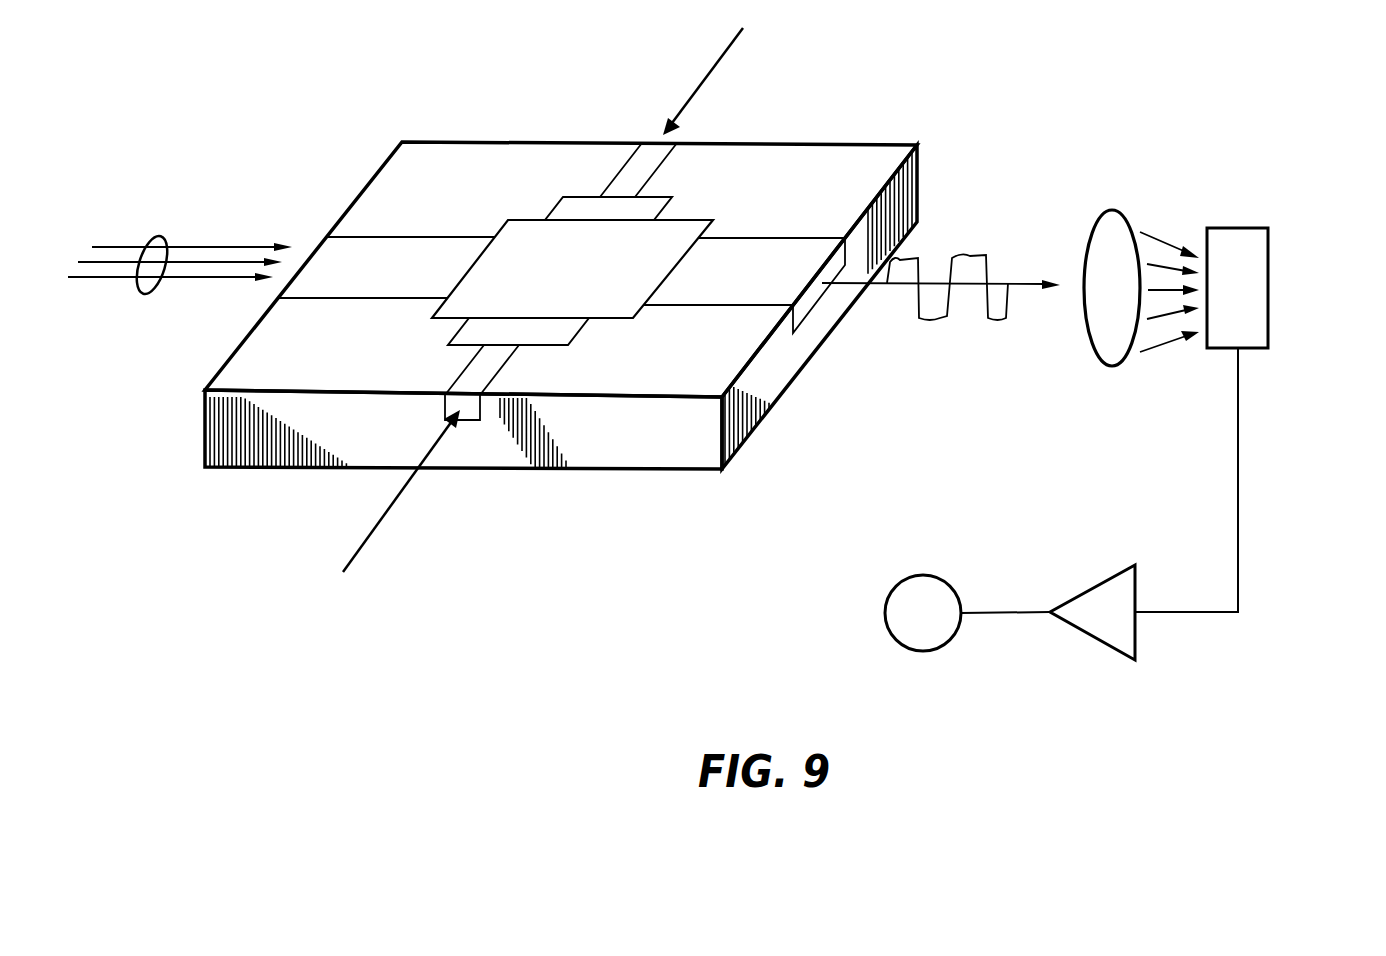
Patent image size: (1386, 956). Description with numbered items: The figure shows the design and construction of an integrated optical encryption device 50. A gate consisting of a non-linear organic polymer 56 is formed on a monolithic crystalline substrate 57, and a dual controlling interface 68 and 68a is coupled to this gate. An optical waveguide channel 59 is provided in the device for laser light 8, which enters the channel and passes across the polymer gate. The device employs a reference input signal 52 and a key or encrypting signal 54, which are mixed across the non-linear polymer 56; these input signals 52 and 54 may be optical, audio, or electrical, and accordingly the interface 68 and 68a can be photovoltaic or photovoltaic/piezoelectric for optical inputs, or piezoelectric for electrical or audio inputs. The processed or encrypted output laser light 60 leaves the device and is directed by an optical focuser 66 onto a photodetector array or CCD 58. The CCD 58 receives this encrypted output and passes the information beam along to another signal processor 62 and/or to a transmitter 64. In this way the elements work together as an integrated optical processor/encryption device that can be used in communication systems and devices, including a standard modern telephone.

The laser light 8 is at (163, 237).
The integrated optical encryption device 50 is at (915, 100).
The reference input signal 52 is at (703, 78).
The key or encrypting signal 54 is at (392, 505).
The non-linear organic polymer 56 is at (665, 265).
The monolithic crystalline substrate 57 is at (820, 150).
The CCD 58 is at (1260, 245).
The optical waveguide channel 59 is at (416, 238).
The output laser light 60 is at (1000, 283).
The signal processor 62 is at (1088, 633).
The transmitter 64 is at (918, 590).
The optical focuser 66 is at (1108, 212).
The controlling interface 68 is at (672, 198).
The controlling interface 68a is at (563, 333).